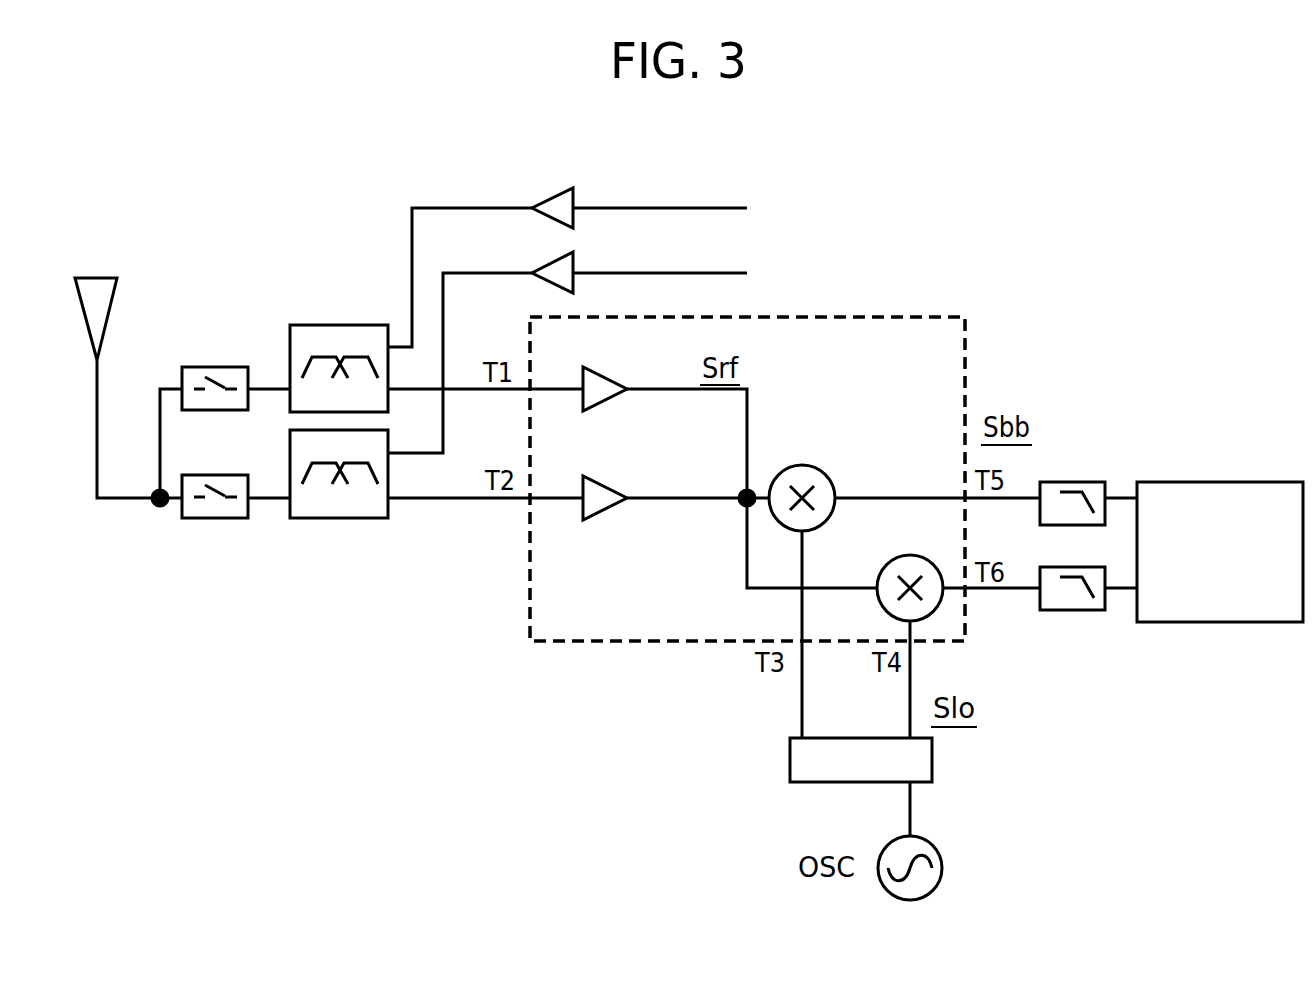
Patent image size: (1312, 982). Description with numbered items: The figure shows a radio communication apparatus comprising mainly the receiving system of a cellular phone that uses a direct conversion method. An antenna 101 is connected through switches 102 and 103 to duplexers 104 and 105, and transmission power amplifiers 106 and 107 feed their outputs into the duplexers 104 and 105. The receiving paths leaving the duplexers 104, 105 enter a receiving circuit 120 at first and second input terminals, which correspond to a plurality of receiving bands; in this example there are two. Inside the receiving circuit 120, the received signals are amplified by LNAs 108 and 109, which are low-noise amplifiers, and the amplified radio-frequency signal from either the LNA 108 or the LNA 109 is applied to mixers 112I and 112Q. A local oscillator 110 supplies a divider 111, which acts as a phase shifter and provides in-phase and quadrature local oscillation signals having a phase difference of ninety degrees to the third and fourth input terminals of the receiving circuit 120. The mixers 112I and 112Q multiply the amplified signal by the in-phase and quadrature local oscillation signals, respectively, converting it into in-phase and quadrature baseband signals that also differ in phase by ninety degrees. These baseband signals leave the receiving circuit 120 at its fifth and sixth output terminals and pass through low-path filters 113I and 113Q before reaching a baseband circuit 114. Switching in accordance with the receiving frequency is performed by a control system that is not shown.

The antenna 101 is at (97, 278).
The switch 102 is at (215, 367).
The switch 103 is at (205, 518).
The duplexer 104 is at (330, 325).
The duplexer 105 is at (348, 518).
The transmission power amplifier 106 is at (574, 187).
The transmission power amplifier 107 is at (574, 256).
The LNA 108 is at (612, 378).
The LNA 109 is at (612, 486).
The local oscillator 110 is at (942, 866).
The divider 111 is at (933, 758).
The mixer 112I is at (826, 474).
The mixer 112Q is at (877, 572).
The low-path filter 113I is at (1072, 481).
The low-path filter 113Q is at (1072, 610).
The baseband circuit 114 is at (1200, 482).
The receiving circuit 120 is at (860, 312).